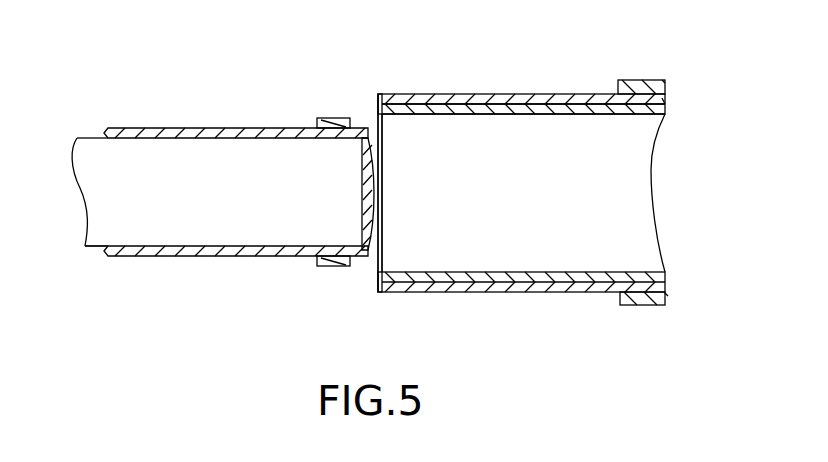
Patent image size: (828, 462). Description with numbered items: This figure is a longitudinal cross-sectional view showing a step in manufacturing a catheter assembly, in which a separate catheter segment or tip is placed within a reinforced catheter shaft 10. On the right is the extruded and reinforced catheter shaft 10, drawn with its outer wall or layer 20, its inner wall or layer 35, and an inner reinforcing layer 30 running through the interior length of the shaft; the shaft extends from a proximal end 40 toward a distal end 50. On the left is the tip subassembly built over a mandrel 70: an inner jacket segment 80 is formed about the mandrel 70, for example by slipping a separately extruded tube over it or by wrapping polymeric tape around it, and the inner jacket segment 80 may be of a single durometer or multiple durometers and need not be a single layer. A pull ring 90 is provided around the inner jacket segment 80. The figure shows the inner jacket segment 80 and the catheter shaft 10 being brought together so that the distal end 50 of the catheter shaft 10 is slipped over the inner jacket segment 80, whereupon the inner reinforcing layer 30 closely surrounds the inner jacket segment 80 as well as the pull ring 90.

The catheter shaft 10 is at (466, 77).
The outer wall or layer 20 is at (660, 82).
The inner reinforcing layer 30 is at (669, 101).
The inner wall or layer 35 is at (583, 108).
The proximal end 40 is at (692, 202).
The distal end 50 is at (432, 202).
The mandrel 70 is at (329, 202).
The inner jacket segment 80 is at (100, 256).
The pull ring 90 is at (340, 264).